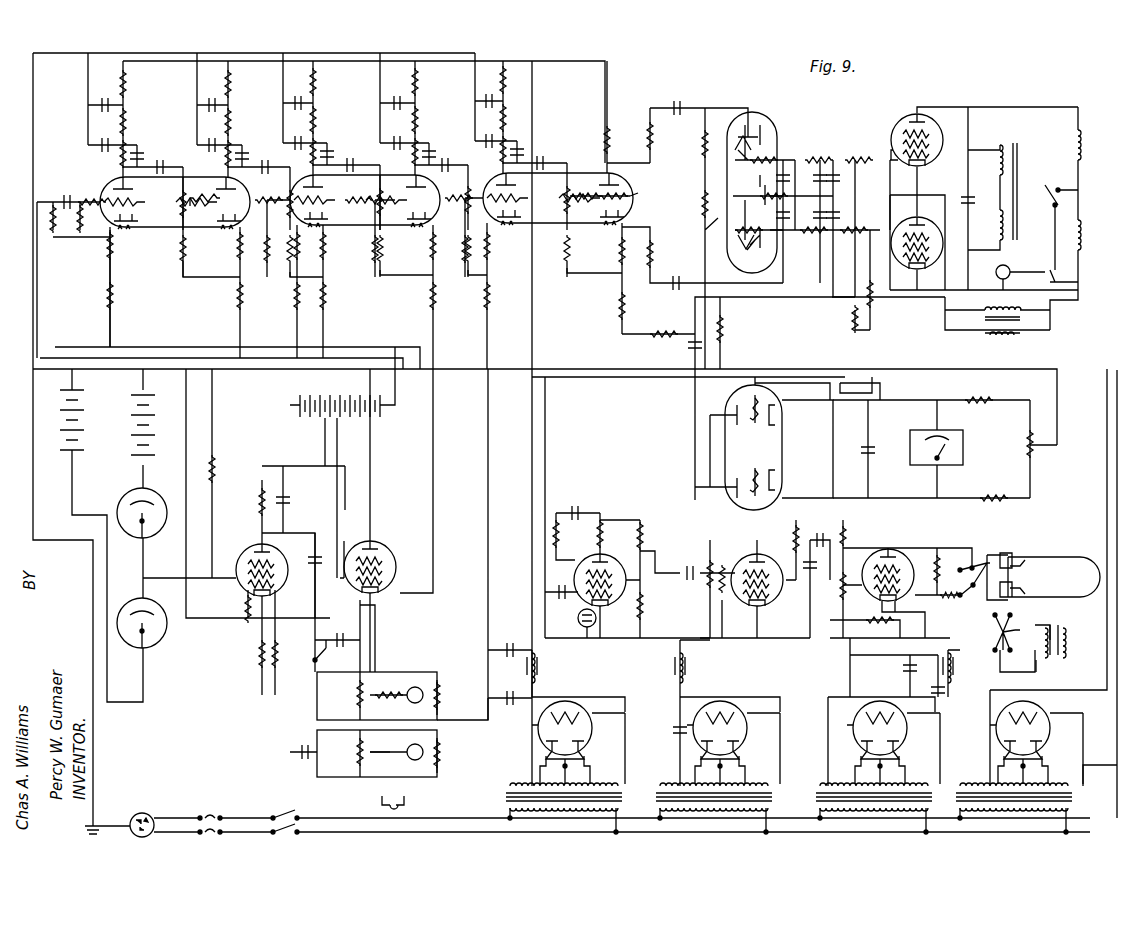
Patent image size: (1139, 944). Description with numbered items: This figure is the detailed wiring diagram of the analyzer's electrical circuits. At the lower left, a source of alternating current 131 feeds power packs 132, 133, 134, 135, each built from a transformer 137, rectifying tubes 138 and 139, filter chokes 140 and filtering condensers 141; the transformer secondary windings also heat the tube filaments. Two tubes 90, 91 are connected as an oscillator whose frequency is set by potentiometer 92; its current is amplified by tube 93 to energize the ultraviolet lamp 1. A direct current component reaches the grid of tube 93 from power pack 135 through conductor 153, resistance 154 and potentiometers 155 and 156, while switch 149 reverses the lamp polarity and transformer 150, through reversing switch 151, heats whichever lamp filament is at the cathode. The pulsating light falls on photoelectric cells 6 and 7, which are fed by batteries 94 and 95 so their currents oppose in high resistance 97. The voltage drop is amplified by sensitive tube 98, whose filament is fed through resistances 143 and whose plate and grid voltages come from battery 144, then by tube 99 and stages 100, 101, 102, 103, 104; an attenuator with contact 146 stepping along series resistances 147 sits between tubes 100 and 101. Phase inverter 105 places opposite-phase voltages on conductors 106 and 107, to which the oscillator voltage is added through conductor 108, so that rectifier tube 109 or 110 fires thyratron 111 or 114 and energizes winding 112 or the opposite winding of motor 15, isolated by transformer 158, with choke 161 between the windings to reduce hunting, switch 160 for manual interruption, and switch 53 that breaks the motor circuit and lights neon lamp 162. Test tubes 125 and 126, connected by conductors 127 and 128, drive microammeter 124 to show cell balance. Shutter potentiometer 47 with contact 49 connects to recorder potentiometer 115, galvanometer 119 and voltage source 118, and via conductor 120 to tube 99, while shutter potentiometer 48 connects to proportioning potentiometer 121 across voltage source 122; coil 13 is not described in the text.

The amplifying tube 100 is at (112, 179).
The amplifying tube 101 is at (221, 178).
The amplifying tube 102 is at (306, 175).
The amplifying tube 103 is at (440, 180).
The amplifying tube 104 is at (488, 174).
The phase inverter tube 105 is at (630, 202).
The conductor 106 is at (688, 104).
The conductor 107 is at (660, 278).
The conductor 108 is at (692, 315).
The rectifier tube 109 is at (782, 126).
The rectifier tube 110 is at (752, 268).
The thyratron relay tube 111 is at (896, 126).
The motor winding 112 is at (1084, 142).
The coil 13 is at (1082, 242).
The motor 15 is at (1088, 162).
The switch 53 is at (1076, 283).
The thyratron relay tube 114 is at (899, 287).
The contact 146 is at (205, 191).
The series resistances 147 is at (180, 246).
The battery 144 is at (314, 396).
The battery 94 is at (82, 436).
The battery 95 is at (130, 458).
The high resistance 97 is at (216, 463).
The amplifying tube 98 is at (246, 550).
The amplifying tube 99 is at (387, 545).
The photoelectric cell 6 is at (150, 538).
The photoelectric cell 7 is at (157, 646).
The resistances 143 is at (265, 670).
The switch 160 is at (1050, 186).
The choke coil 161 is at (1018, 148).
The neon lamp 162 is at (1010, 268).
The transformer 158 is at (1040, 330).
The source of voltage 118 is at (335, 654).
The conductor 120 is at (378, 632).
The galvanometer 119 is at (415, 686).
The potentiometer 115 is at (440, 684).
The potentiometer 47 is at (355, 692).
The potentiometer 48 is at (360, 766).
The contact arm 49 is at (364, 695).
The potentiometer 121 is at (437, 742).
The source of voltage 122 is at (299, 750).
The source of alternating current 131 is at (150, 812).
The electron vacuum tube 90 is at (591, 552).
The electron vacuum tube 91 is at (741, 566).
The potentiometer 92 is at (568, 617).
The amplifier tube 93 is at (892, 550).
The vacuum electron tube 125 is at (732, 404).
The vacuum electron tube 126 is at (772, 500).
The conductor 127 is at (772, 384).
The conductor 128 is at (836, 460).
The test microammeter 124 is at (965, 446).
The adjustable potentiometer 156 is at (848, 550).
The adjustable potentiometer 155 is at (866, 626).
The resistance 154 is at (868, 656).
The switch 149 is at (974, 556).
The ultraviolet lamp 1 is at (1044, 558).
The transformer 150 is at (1054, 626).
The reversing switch 151 is at (993, 631).
The conductor 153 is at (990, 634).
The filtering condensers 141 is at (510, 681).
The filter chokes 140 is at (538, 662).
The power pack 132 is at (588, 684).
The power pack 133 is at (748, 684).
The power pack 134 is at (1054, 686).
The power pack 135 is at (875, 684).
The rectifying tube 138 is at (538, 738).
The rectifying tube 139 is at (768, 736).
The transformer 137 is at (1072, 792).